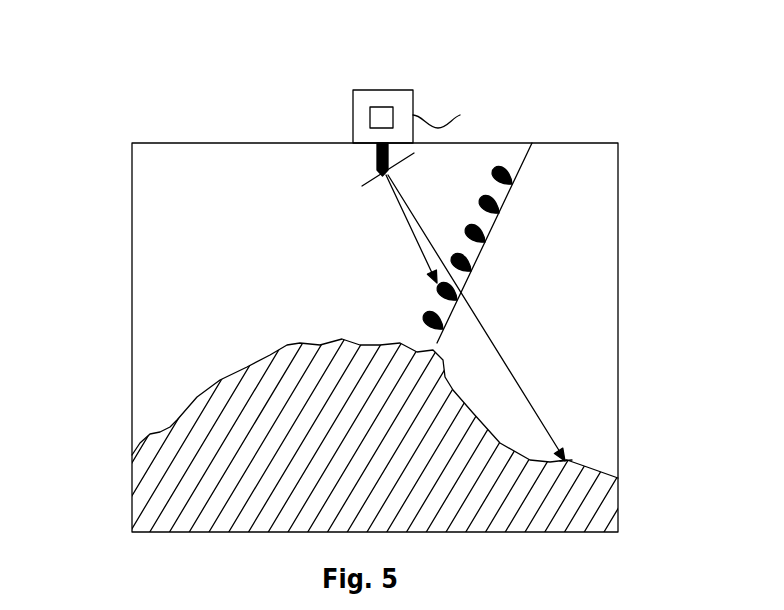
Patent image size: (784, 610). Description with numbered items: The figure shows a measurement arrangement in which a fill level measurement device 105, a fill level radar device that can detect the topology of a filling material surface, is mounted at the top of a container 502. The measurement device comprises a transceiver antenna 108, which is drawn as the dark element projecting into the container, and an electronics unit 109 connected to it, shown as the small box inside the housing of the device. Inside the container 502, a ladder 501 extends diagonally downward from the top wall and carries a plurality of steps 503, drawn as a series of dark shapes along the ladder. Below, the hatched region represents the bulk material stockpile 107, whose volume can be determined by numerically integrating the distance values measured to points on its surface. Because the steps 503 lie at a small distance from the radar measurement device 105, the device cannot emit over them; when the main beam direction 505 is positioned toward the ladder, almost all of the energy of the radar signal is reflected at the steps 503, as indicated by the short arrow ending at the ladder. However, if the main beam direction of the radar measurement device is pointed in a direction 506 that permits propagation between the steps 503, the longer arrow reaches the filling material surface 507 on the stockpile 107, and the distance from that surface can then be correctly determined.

The fill level measurement device 105 is at (397, 90).
The electronics unit 109 is at (370, 117).
The transceiver antenna 108 is at (356, 187).
The bulk material stockpile 107 is at (167, 483).
The ladder 501 is at (489, 229).
The container 502 is at (618, 285).
The steps 503 is at (460, 256).
The main beam direction 505 is at (419, 245).
The direction 506 is at (494, 342).
The filling material surface 507 is at (569, 458).